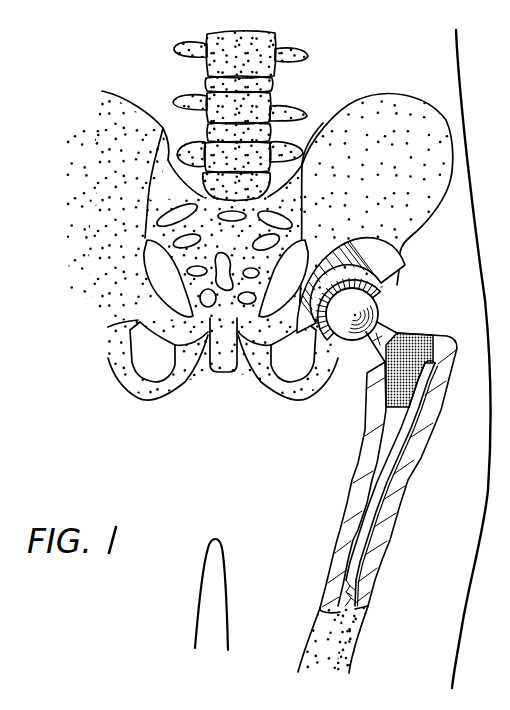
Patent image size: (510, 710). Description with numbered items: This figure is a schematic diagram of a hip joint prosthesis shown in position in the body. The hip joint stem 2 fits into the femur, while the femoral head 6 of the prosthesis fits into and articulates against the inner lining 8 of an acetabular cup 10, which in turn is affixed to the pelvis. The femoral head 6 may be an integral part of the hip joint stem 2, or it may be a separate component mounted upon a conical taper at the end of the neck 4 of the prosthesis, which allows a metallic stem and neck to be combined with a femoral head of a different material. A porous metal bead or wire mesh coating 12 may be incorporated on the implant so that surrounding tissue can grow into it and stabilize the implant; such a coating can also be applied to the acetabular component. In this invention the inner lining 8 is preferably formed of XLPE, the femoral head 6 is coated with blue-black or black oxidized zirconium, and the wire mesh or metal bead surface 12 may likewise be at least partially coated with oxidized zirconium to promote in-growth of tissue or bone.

The hip joint stem 2 is at (380, 477).
The neck 4 is at (372, 342).
The femoral head 6 is at (381, 313).
The inner lining 8 is at (387, 298).
The acetabular cup 10 is at (400, 270).
The porous metal bead or wire mesh coating 12 is at (380, 396).